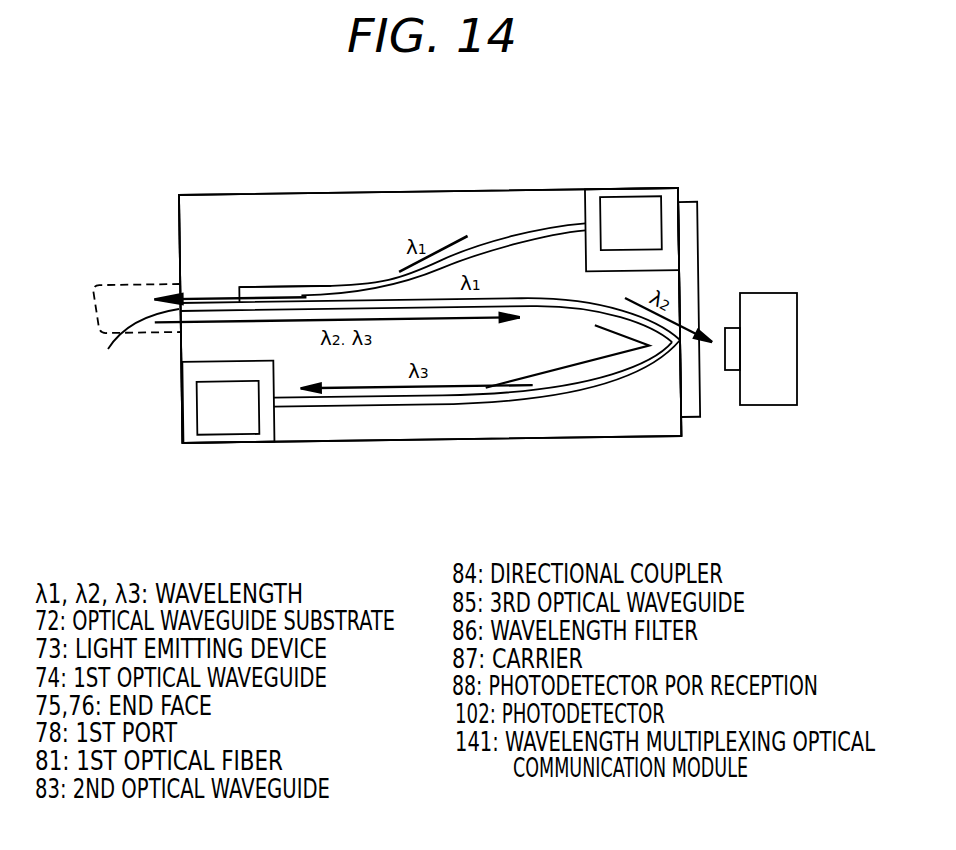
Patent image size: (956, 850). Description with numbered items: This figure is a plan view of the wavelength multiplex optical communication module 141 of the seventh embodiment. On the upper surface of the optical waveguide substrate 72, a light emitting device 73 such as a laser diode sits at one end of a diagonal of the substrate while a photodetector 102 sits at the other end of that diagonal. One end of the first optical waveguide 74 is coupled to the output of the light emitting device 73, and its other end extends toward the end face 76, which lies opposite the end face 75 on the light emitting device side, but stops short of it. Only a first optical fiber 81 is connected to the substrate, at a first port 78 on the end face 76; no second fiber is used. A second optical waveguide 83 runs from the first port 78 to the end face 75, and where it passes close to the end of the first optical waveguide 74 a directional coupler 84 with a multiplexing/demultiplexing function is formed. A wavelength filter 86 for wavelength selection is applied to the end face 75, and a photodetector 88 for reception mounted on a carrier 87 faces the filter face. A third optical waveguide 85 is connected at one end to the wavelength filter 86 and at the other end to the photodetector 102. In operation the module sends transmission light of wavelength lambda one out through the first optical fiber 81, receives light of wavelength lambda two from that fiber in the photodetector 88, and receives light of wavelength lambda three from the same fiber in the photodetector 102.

The optical waveguide substrate 72 is at (303, 207).
The light emitting device 73 is at (628, 196).
The first optical waveguide 74 is at (481, 243).
The end face 75 is at (680, 228).
The end face 76 is at (179, 226).
The first port 78 is at (135, 341).
The first optical fiber 81 is at (138, 276).
The second optical waveguide 83 is at (515, 296).
The directional coupler 84 is at (286, 287).
The third optical waveguide 85 is at (442, 408).
The wavelength filter 86 is at (693, 418).
The carrier 87 is at (763, 293).
The photodetector for reception 88 is at (733, 367).
The photodetector 102 is at (229, 426).
The wavelength multiplex optical communication module 141 is at (728, 183).